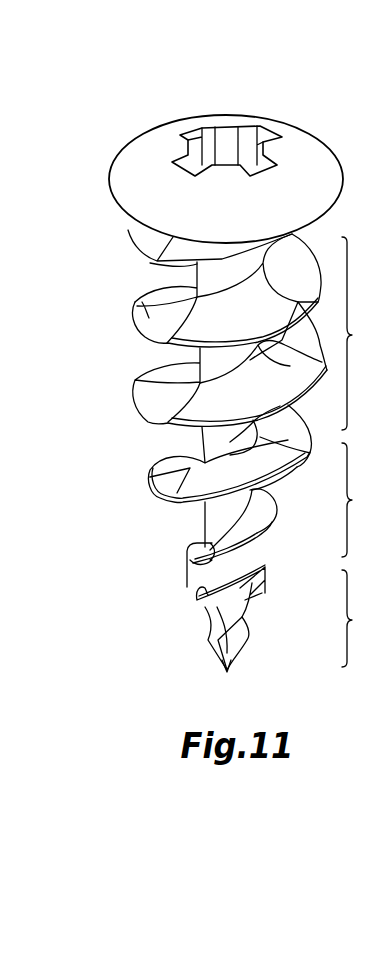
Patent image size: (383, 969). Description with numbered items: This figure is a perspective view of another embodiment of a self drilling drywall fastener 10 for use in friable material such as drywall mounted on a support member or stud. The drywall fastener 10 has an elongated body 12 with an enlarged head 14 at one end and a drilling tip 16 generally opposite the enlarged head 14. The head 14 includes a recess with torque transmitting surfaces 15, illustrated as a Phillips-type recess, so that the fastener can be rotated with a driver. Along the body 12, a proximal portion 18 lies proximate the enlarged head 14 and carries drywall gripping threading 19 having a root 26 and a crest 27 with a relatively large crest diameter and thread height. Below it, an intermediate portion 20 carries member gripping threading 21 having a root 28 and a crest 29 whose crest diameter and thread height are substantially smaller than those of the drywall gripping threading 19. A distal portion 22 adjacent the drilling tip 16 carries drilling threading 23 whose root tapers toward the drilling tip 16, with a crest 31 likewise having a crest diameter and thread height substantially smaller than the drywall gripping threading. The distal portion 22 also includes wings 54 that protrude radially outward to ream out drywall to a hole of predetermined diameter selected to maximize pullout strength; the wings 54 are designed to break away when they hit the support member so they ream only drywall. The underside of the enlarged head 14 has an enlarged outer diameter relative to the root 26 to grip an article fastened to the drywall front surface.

The drywall fastener 10 is at (101, 548).
The elongated body 12 is at (147, 367).
The enlarged head 14 is at (305, 138).
The torque transmitting surfaces 15 is at (210, 140).
The drilling tip 16 is at (227, 671).
The proximal portion 18 is at (362, 333).
The drywall gripping threading 19 is at (138, 303).
The intermediate portion 20 is at (362, 500).
The member gripping threading 21 is at (268, 490).
The distal portion 22 is at (362, 618).
The drilling threading 23 is at (207, 638).
The root 26 is at (150, 263).
The crest 27 is at (130, 322).
The root 28 is at (208, 520).
The crest 29 is at (273, 527).
The crest 31 is at (250, 642).
The wing 54 is at (268, 592).